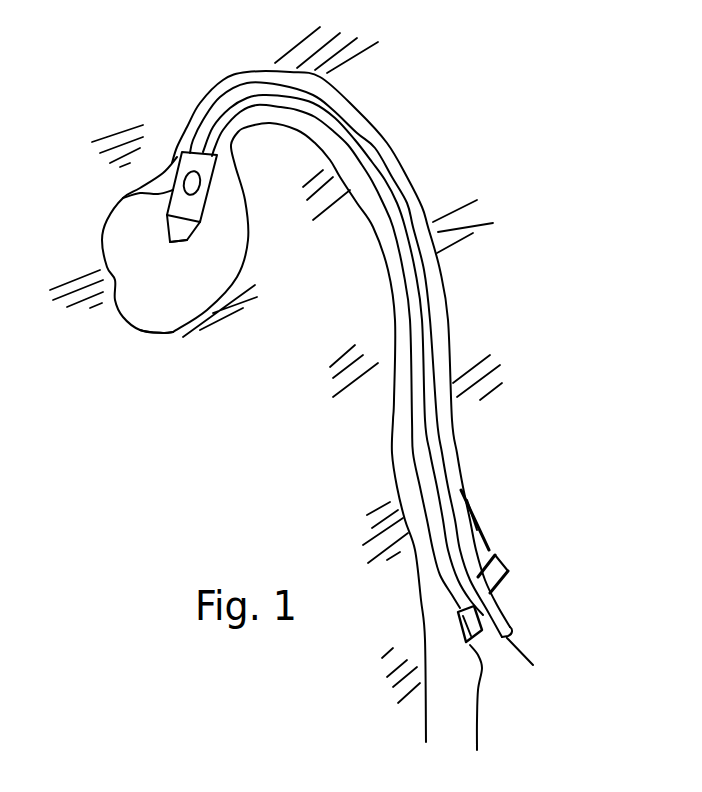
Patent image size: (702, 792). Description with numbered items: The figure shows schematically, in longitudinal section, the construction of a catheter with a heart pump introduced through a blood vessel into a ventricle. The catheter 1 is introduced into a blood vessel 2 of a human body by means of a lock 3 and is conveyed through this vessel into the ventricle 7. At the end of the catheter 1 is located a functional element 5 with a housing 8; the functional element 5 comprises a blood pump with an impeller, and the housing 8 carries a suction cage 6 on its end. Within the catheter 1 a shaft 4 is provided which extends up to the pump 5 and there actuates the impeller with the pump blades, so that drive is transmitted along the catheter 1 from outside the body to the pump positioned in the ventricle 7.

The catheter 1 is at (438, 472).
The blood vessel 2 is at (495, 537).
The lock 3 is at (505, 580).
The shaft 4 is at (422, 315).
The functional element 5 is at (195, 170).
The suction cage 6 is at (195, 236).
The ventricle 7 is at (163, 325).
The housing 8 is at (123, 198).